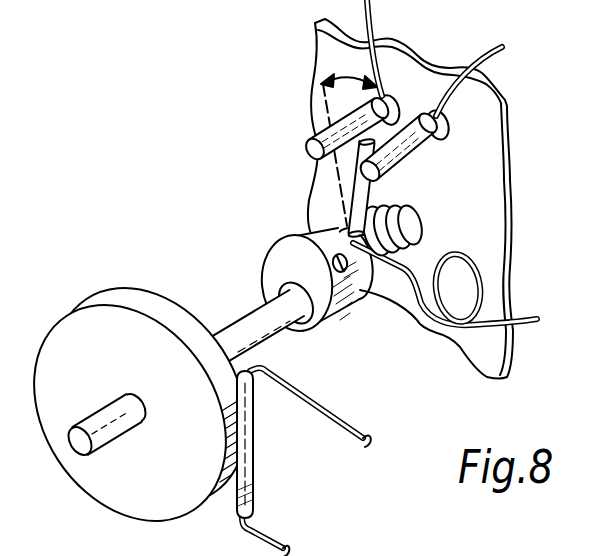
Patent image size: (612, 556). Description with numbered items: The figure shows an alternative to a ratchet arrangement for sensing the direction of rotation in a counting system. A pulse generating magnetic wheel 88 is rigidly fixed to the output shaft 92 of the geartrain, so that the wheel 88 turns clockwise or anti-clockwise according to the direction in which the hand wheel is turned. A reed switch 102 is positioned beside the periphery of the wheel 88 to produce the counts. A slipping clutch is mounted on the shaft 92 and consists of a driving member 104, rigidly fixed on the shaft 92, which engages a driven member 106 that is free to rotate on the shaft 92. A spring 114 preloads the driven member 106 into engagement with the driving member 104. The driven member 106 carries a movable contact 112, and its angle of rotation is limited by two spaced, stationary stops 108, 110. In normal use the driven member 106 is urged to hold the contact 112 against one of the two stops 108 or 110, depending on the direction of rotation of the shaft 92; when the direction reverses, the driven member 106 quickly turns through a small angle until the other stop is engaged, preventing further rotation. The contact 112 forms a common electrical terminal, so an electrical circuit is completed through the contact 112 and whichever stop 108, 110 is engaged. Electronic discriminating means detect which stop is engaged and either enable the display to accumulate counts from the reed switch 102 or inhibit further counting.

The pulse generating magnetic wheel 88 is at (173, 310).
The output shaft 92 is at (100, 450).
The reed switch 102 is at (250, 486).
The driving member 104 is at (300, 246).
The driven member 106 is at (343, 222).
The stationary stop 108 is at (318, 138).
The stationary stop 110 is at (453, 150).
The movable contact 112 is at (367, 193).
The spring 114 is at (418, 232).